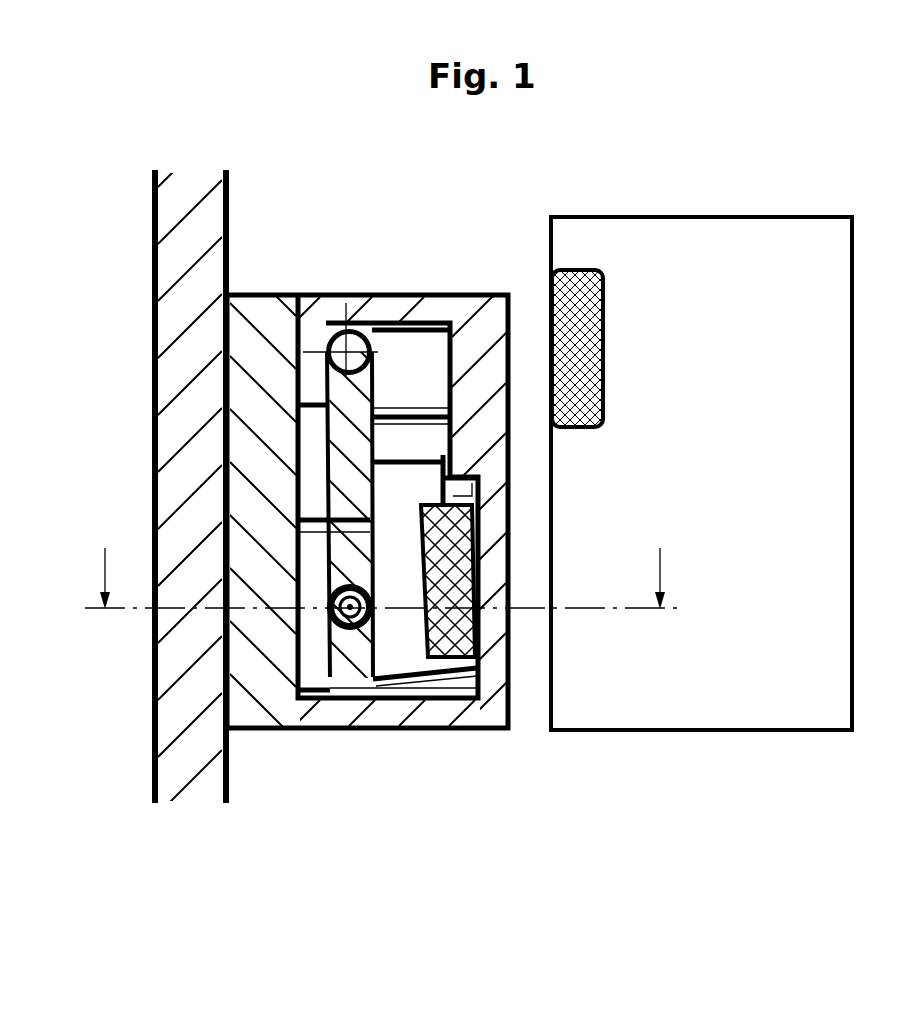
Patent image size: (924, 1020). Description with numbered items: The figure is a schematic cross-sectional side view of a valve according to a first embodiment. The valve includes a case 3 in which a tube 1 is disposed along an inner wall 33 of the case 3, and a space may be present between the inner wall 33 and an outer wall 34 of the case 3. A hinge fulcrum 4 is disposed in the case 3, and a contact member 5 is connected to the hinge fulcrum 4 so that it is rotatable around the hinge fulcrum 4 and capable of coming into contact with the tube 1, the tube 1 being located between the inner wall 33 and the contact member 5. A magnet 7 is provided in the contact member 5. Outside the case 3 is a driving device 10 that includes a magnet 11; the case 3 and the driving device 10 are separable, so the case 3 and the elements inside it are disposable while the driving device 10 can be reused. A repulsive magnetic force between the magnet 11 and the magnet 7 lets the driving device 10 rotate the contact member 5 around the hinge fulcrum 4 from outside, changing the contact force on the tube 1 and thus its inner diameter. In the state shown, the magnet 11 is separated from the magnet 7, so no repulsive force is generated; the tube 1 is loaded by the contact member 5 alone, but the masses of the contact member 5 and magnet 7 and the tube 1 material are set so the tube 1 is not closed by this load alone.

The tube 1 is at (368, 655).
The case 3 is at (495, 292).
The hinge fulcrum 4 is at (340, 318).
The contact member 5 is at (400, 655).
The magnet 7 is at (445, 527).
The driving device 10 is at (594, 734).
The magnet 11 is at (587, 347).
The inner wall 33 is at (340, 650).
The outer wall 34 is at (230, 684).